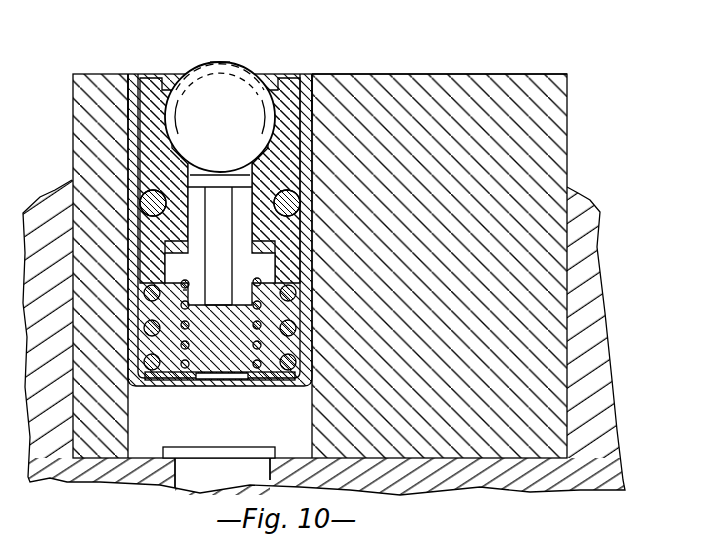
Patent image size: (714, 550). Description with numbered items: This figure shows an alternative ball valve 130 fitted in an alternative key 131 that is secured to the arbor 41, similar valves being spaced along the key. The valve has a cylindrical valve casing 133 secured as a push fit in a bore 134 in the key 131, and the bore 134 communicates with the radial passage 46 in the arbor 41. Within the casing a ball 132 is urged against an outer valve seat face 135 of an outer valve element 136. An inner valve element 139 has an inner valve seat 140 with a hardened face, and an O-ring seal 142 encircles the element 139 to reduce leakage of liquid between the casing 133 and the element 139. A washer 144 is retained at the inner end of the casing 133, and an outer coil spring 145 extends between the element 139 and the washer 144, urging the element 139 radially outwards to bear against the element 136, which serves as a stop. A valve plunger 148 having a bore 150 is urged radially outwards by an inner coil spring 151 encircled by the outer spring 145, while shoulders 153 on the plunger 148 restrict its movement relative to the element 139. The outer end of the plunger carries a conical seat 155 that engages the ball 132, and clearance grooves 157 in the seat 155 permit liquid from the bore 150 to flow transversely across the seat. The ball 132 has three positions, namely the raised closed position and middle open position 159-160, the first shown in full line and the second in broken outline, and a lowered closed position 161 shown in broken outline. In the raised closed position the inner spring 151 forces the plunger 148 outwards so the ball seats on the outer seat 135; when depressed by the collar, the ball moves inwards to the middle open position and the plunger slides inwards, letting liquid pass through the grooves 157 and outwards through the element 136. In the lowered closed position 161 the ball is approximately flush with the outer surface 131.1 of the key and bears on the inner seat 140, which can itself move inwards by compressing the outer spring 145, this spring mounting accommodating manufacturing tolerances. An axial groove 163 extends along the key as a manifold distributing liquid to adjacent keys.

The arbor 41 is at (580, 203).
The radial passage 46 is at (214, 483).
The alternative ball valve 130 is at (216, 50).
The alternative key 131 is at (450, 62).
The outer surface of the key 131.1 is at (503, 75).
The ball 132 is at (236, 114).
The cylindrical valve casing 133 is at (312, 75).
The bore 134 is at (170, 413).
The outer valve seat face 135 is at (193, 75).
The outer valve element 136 is at (163, 75).
The inner valve element 139 is at (292, 165).
The inner valve seat 140 is at (191, 119).
The O-ring seal 142 is at (292, 203).
The washer 144 is at (236, 381).
The outer coil spring 145 is at (282, 327).
The valve plunger 148 is at (196, 300).
The bore 150 is at (212, 298).
The inner coil spring 151 is at (188, 348).
The shoulders 153 is at (272, 252).
The conical seat 155 is at (198, 175).
The clearance grooves 157 is at (249, 119).
The raised closed position and middle open position 159-160 is at (214, 64).
The lowered closed position 161 is at (250, 74).
The axial groove 163 is at (220, 432).